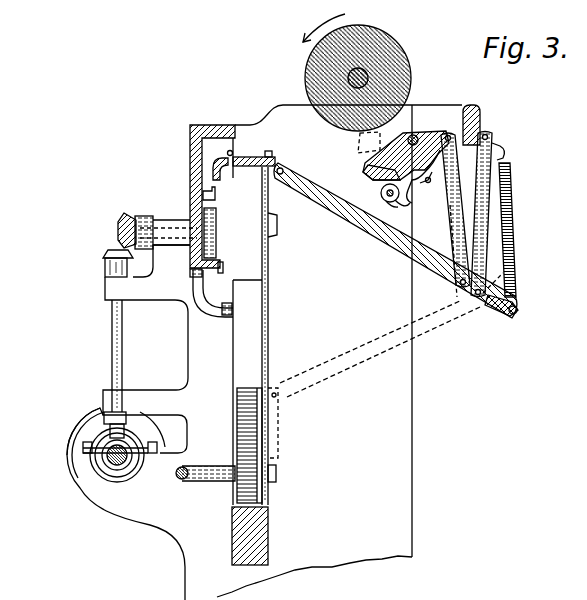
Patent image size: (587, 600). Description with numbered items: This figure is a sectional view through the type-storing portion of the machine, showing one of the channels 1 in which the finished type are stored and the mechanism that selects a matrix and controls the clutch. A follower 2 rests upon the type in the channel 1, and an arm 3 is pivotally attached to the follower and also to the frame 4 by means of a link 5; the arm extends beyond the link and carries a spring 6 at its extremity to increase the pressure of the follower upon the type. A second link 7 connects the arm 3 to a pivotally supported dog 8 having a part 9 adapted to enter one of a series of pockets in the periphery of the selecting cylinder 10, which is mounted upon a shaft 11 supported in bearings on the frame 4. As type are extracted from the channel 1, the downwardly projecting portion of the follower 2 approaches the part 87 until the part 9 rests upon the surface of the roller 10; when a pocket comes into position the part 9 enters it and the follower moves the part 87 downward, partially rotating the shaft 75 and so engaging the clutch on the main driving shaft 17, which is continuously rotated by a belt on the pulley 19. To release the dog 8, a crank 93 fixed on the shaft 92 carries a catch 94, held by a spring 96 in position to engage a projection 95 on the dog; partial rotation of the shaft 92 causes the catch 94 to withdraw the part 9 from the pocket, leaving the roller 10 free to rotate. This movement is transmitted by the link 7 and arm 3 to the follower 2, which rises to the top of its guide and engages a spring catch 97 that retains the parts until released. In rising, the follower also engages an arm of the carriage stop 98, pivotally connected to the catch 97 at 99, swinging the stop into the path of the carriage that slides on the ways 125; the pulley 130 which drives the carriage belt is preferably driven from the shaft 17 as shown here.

The channel 1 is at (253, 328).
The follower 2 is at (270, 228).
The arm 3 is at (364, 220).
The frame 4 is at (190, 152).
The link 5 is at (485, 183).
The spring 6 is at (513, 212).
The second link 7 is at (452, 234).
The dog 8 is at (430, 140).
The part of dog 9 is at (377, 174).
The selecting cylinder 10 is at (403, 70).
The shaft 11 is at (343, 70).
The shaft 17 is at (108, 450).
The pulley 19 is at (78, 420).
The shaft 75 is at (178, 477).
The part 87 is at (217, 482).
The shaft 92 is at (380, 193).
The crank 93 is at (413, 200).
The catch 94 is at (428, 182).
The projection 95 is at (357, 148).
The spring 96 is at (397, 207).
The spring catch 97 is at (240, 167).
The carriage stop 98 is at (215, 170).
The pivot 99 is at (230, 151).
The ways 125 is at (215, 193).
The pulley 130 is at (216, 218).